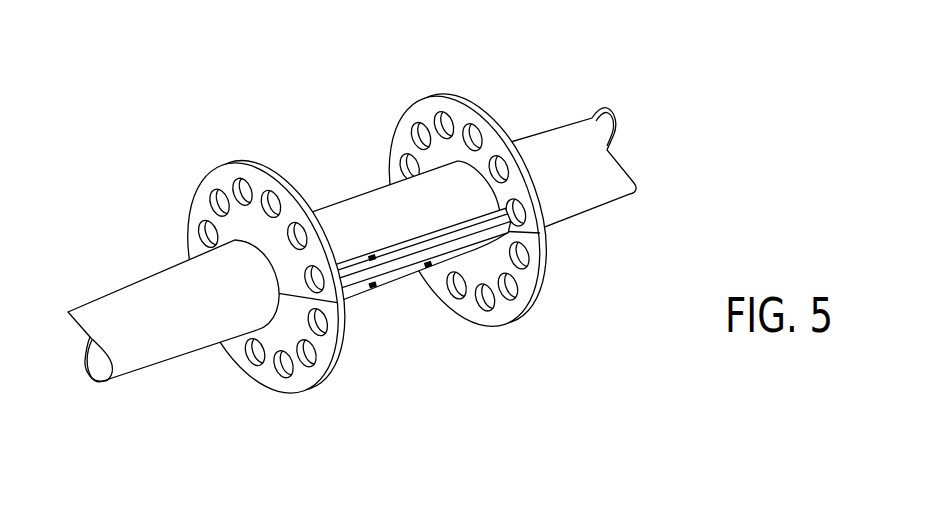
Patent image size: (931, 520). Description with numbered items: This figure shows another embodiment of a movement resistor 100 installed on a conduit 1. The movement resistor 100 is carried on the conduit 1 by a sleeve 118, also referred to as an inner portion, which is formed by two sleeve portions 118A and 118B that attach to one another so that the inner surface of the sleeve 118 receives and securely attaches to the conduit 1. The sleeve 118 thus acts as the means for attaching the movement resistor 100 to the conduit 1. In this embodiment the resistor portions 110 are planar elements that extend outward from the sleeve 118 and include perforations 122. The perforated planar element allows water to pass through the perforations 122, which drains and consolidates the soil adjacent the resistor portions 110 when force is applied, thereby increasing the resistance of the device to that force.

The conduit 1 is at (352, 239).
The movement resistor 100 is at (363, 239).
The resistor portions 110 is at (363, 239).
The sleeve 118 is at (381, 214).
The sleeve portion 118A is at (368, 203).
The sleeve portion 118B is at (394, 284).
The perforations 122 is at (436, 122).